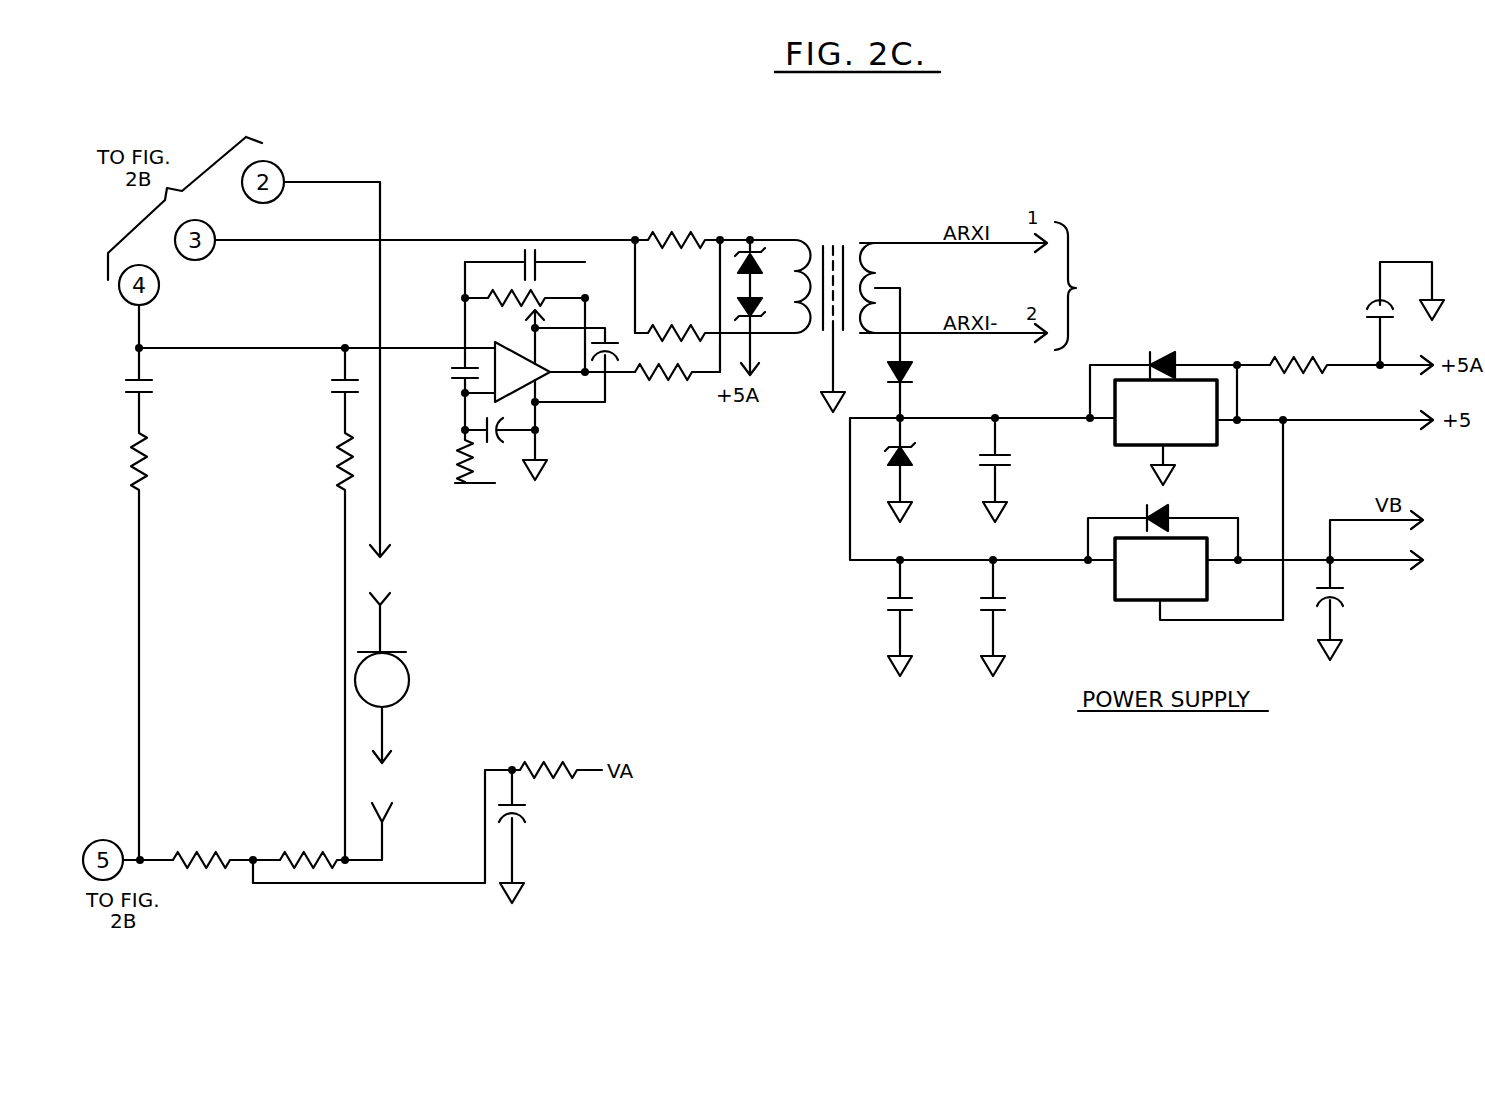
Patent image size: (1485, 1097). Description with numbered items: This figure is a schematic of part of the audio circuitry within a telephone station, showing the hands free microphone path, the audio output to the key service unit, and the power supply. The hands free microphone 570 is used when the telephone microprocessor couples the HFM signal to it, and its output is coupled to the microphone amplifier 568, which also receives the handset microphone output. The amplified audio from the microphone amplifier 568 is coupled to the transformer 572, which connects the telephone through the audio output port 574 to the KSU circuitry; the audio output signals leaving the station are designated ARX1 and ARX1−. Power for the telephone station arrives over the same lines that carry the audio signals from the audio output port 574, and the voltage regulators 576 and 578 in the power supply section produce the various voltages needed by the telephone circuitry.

The microphone amplifier 568 is at (490, 340).
The hands free microphone 570 is at (409, 678).
The transformer 572 is at (836, 243).
The audio output port 574 is at (1043, 263).
The voltage regulator 576 is at (1192, 447).
The voltage regulator 578 is at (1117, 600).